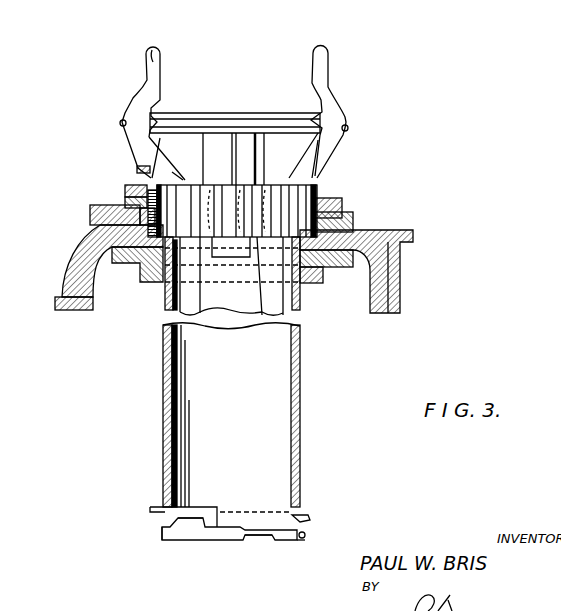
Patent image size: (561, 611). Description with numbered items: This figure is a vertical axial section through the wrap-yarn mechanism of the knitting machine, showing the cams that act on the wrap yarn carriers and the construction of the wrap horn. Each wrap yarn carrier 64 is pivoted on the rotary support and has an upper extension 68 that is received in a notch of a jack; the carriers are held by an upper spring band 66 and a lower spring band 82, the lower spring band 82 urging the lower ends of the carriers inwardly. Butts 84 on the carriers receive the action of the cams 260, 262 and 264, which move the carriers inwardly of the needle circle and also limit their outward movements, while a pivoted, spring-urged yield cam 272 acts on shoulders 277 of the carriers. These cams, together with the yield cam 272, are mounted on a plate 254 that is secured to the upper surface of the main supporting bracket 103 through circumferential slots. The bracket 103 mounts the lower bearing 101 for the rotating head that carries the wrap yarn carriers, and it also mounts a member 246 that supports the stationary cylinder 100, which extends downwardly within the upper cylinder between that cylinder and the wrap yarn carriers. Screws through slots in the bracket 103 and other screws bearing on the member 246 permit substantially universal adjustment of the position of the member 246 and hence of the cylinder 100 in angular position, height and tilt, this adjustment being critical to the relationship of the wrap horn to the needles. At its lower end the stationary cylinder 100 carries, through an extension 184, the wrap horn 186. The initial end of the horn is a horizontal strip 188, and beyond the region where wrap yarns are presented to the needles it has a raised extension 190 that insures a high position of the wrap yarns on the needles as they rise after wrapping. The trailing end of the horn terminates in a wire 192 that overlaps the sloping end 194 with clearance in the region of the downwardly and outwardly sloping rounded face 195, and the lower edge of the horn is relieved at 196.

The upper extension 68 is at (147, 57).
The spring band 66 is at (347, 128).
The wrap yarn carrier 64 is at (157, 128).
The shoulder 277 is at (156, 147).
The butt 84 is at (165, 160).
The lower spring band 82 is at (320, 187).
The yield cam 272 is at (137, 169).
The cam 260 is at (125, 188).
The cam 262 is at (125, 201).
The cam 264 is at (140, 213).
The plate 254 is at (90, 215).
The main supporting bracket 103 is at (70, 270).
The lower bearing 101 is at (350, 212).
The member 246 is at (345, 267).
The stationary cylinder 100 is at (165, 295).
The extension 184 is at (247, 512).
The wrap horn 186 is at (224, 555).
The horizontal strip 188 is at (170, 540).
The raised extension 190 is at (165, 513).
The wire 192 is at (307, 516).
The sloping end 194 is at (304, 540).
The sloping rounded face 195 is at (306, 535).
The relieved lower edge 196 is at (262, 537).